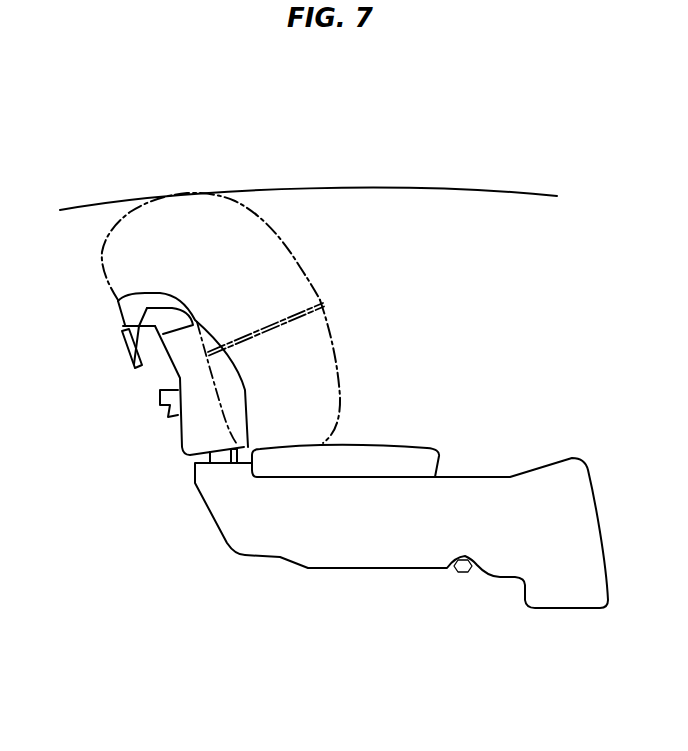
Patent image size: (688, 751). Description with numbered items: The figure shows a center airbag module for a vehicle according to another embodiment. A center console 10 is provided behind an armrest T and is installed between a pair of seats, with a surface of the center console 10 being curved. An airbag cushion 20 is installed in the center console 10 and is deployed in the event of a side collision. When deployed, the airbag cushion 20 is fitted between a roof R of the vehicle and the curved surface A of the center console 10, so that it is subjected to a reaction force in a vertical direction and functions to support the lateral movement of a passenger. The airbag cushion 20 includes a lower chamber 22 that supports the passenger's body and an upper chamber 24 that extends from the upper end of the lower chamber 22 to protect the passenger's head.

The center console 10 is at (193, 430).
The airbag cushion 20 is at (307, 318).
The lower chamber 22 is at (325, 352).
The upper chamber 24 is at (292, 270).
The roof R is at (193, 174).
The curved surface A is at (221, 306).
The armrest T is at (428, 448).